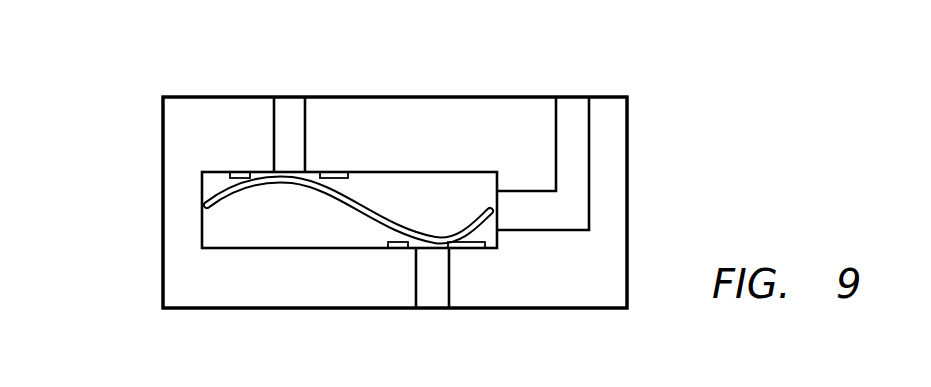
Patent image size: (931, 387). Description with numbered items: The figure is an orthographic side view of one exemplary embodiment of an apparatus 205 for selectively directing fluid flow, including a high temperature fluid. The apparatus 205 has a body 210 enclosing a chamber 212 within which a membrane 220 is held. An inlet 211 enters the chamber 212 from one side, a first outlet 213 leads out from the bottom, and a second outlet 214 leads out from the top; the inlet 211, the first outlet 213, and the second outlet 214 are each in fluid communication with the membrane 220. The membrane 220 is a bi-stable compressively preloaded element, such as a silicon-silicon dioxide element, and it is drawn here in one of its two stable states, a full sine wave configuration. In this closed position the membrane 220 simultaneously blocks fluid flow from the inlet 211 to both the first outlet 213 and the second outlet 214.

The apparatus 205 is at (137, 76).
The substrate / housing body 210 is at (233, 287).
The inlet 211 is at (572, 211).
The chamber 212 is at (460, 182).
The first outlet 213 is at (433, 288).
The second outlet 214 is at (290, 147).
The membrane 220 is at (313, 183).